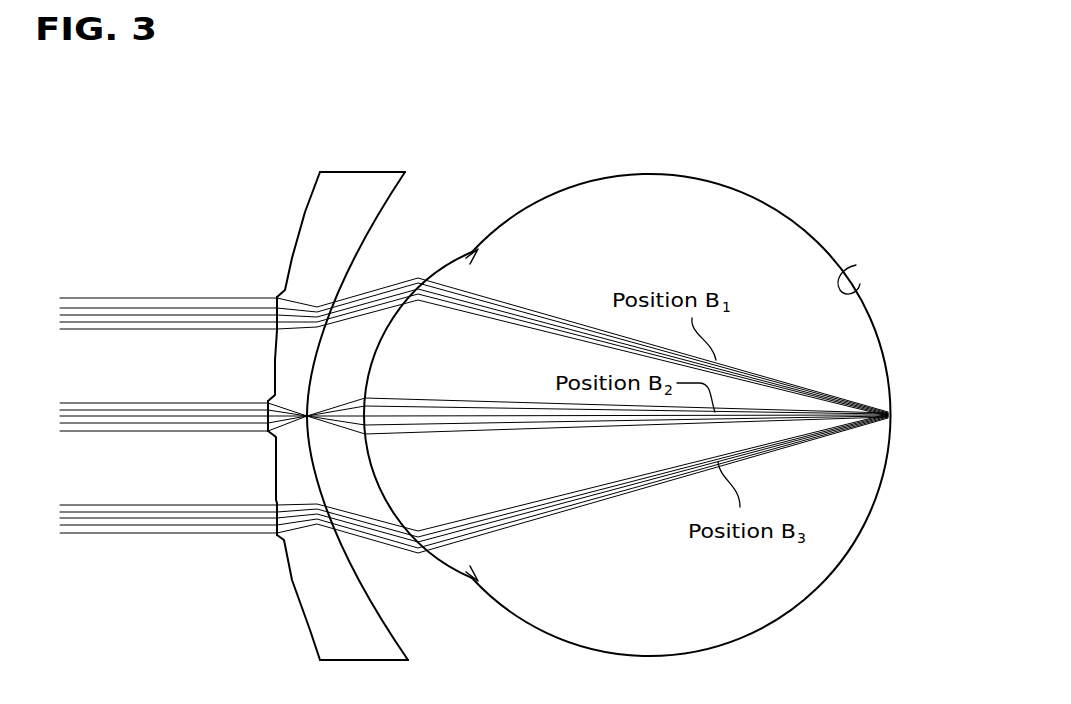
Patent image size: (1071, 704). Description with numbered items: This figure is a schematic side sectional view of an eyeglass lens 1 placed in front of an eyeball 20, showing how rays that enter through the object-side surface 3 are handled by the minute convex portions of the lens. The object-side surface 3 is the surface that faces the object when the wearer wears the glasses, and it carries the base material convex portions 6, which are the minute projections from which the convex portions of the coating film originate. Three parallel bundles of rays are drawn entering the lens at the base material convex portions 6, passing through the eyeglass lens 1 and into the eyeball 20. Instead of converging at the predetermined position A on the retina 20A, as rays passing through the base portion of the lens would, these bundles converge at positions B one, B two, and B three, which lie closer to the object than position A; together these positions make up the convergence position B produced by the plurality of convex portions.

The eyeglass lens 1 is at (400, 150).
The object-side surface 3 is at (286, 288).
The base material convex portions 6 is at (277, 320).
The eyeball 20 is at (808, 160).
The retina 20A is at (856, 265).